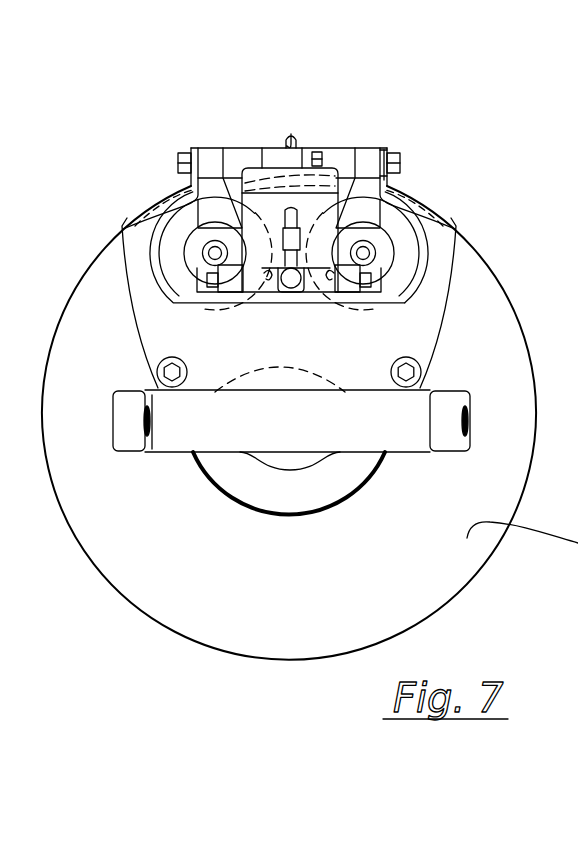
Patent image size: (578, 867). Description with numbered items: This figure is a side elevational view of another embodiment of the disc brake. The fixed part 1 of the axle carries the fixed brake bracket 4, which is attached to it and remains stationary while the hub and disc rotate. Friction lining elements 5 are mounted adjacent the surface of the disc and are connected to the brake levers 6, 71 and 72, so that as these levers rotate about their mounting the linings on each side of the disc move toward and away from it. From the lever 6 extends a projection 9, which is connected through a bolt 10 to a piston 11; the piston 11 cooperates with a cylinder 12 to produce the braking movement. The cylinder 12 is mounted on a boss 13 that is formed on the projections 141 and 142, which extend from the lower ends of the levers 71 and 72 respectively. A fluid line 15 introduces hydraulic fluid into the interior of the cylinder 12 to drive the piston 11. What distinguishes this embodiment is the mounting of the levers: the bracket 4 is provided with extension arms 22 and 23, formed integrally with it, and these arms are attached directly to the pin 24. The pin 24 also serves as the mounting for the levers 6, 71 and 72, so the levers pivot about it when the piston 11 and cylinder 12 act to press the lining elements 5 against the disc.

The fixed part of the axis 1 is at (368, 442).
The fixed brake bracket 4 is at (424, 335).
The friction lining elements 5 is at (170, 198).
The brake lever 71 is at (175, 192).
The brake lever 72 is at (408, 192).
The brake lever 6 is at (246, 157).
The projection 9 is at (289, 137).
The bolt 10 is at (318, 148).
The piston 11 is at (270, 155).
The cylinder 12 is at (192, 218).
The boss 13 is at (330, 274).
The projection 141 is at (232, 277).
The projection 142 is at (348, 275).
The fluid line 15 is at (352, 218).
The extension arm 22 is at (192, 168).
The extension arm 23 is at (381, 155).
The pin 24 is at (400, 160).